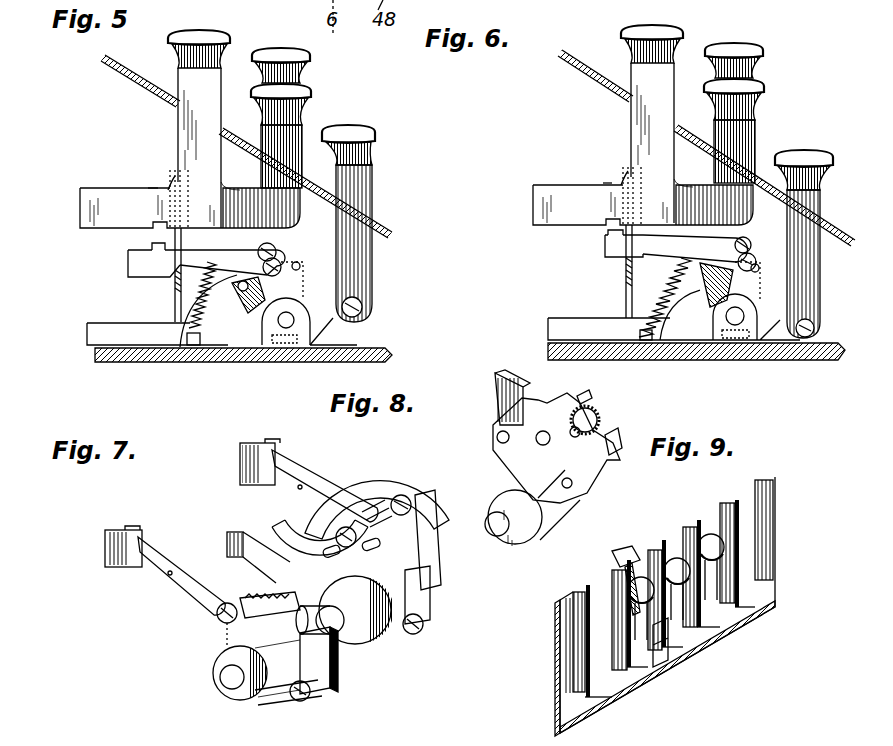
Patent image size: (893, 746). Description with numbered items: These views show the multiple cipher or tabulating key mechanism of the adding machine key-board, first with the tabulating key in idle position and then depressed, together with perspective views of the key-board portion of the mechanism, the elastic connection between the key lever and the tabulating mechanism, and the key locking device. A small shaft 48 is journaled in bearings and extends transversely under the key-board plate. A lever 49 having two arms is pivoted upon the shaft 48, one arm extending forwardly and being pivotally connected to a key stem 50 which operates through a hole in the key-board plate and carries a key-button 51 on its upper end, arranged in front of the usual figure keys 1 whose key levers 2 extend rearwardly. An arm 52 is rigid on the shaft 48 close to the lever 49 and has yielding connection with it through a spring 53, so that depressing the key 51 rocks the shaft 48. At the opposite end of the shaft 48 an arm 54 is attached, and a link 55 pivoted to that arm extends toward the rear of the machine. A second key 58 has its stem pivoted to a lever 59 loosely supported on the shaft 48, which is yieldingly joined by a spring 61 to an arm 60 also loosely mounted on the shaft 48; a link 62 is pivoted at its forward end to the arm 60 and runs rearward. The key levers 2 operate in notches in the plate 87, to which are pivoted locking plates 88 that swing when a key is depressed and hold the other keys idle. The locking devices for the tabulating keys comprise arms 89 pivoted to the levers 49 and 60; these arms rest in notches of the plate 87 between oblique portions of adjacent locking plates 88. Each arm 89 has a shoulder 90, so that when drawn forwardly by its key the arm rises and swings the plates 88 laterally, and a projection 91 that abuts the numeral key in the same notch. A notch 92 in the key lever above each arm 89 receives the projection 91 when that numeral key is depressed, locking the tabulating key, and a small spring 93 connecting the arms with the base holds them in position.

In FIG. 5, the figure keys 1 is at (180, 57).
In FIG. 6, the figure keys 1 is at (653, 82).
In FIG. 5, the key levers 2 is at (95, 195).
In FIG. 6, the key levers 2 is at (530, 197).
In FIG. 9, the key levers 2 is at (713, 638).
In FIG. 5, the shaft 48 is at (284, 322).
In FIG. 6, the shaft 48 is at (733, 323).
In FIG. 7, the shaft 48 is at (355, 647).
In FIG. 8, the shaft 48 is at (613, 463).
In FIG. 5, the lever 49 is at (340, 323).
In FIG. 6, the lever 49 is at (780, 328).
In FIG. 7, the lever 49 is at (278, 695).
In FIG. 5, the key stem 50 is at (372, 253).
In FIG. 6, the key stem 50 is at (820, 270).
In FIG. 7, the key stem 50 is at (315, 667).
In FIG. 5, the key-button 51 is at (355, 133).
In FIG. 6, the key-button 51 is at (810, 158).
In FIG. 7, the arm 52 is at (262, 598).
In FIG. 7, the spring 53 is at (282, 601).
In FIG. 7, the arm 54 is at (413, 525).
In FIG. 7, the link 55 is at (387, 487).
In FIG. 8, the key 58 is at (508, 380).
In FIG. 7, the lever 59 is at (430, 588).
In FIG. 8, the lever 59 is at (580, 399).
In FIG. 8, the arm 60 is at (563, 498).
In FIG. 8, the spring 61 is at (607, 428).
In FIG. 7, the link 62 is at (237, 535).
In FIG. 5, the plate 87 is at (177, 175).
In FIG. 6, the plate 87 is at (627, 170).
In FIG. 9, the plate 87 is at (775, 523).
In FIG. 5, the locking plates 88 is at (181, 248).
In FIG. 6, the locking plates 88 is at (637, 266).
In FIG. 9, the locking plates 88 is at (708, 612).
In FIG. 5, the arms 89 is at (240, 262).
In FIG. 6, the arms 89 is at (675, 242).
In FIG. 7, the arms 89 is at (155, 567).
In FIG. 9, the arms 89 is at (678, 653).
In FIG. 5, the shoulder 90 is at (145, 268).
In FIG. 6, the shoulder 90 is at (620, 250).
In FIG. 7, the shoulder 90 is at (110, 553).
In FIG. 5, the projection 91 is at (152, 247).
In FIG. 6, the projection 91 is at (620, 232).
In FIG. 7, the projection 91 is at (133, 528).
In FIG. 5, the notch 92 is at (148, 190).
In FIG. 6, the notch 92 is at (612, 190).
In FIG. 5, the spring 93 is at (215, 290).
In FIG. 6, the spring 93 is at (658, 297).